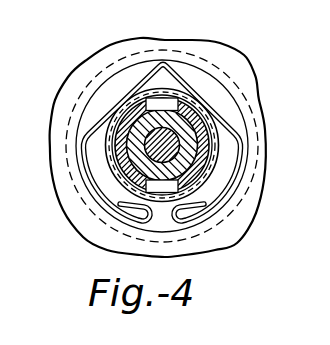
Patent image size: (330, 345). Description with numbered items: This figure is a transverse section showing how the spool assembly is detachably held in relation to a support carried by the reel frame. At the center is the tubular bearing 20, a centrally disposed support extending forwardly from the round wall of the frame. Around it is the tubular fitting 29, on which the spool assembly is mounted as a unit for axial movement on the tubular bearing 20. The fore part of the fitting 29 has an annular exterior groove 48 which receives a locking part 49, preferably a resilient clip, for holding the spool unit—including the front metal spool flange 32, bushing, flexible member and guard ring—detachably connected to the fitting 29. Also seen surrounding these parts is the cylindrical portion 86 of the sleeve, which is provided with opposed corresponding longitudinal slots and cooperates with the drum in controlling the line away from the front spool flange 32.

The tubular bearing 20 is at (205, 133).
The tubular fitting 29 is at (220, 154).
The front metal spool flange 32 is at (250, 208).
The annular exterior groove 48 is at (228, 165).
The locking part 49 is at (147, 72).
The cylindrical portion 86 is at (127, 113).